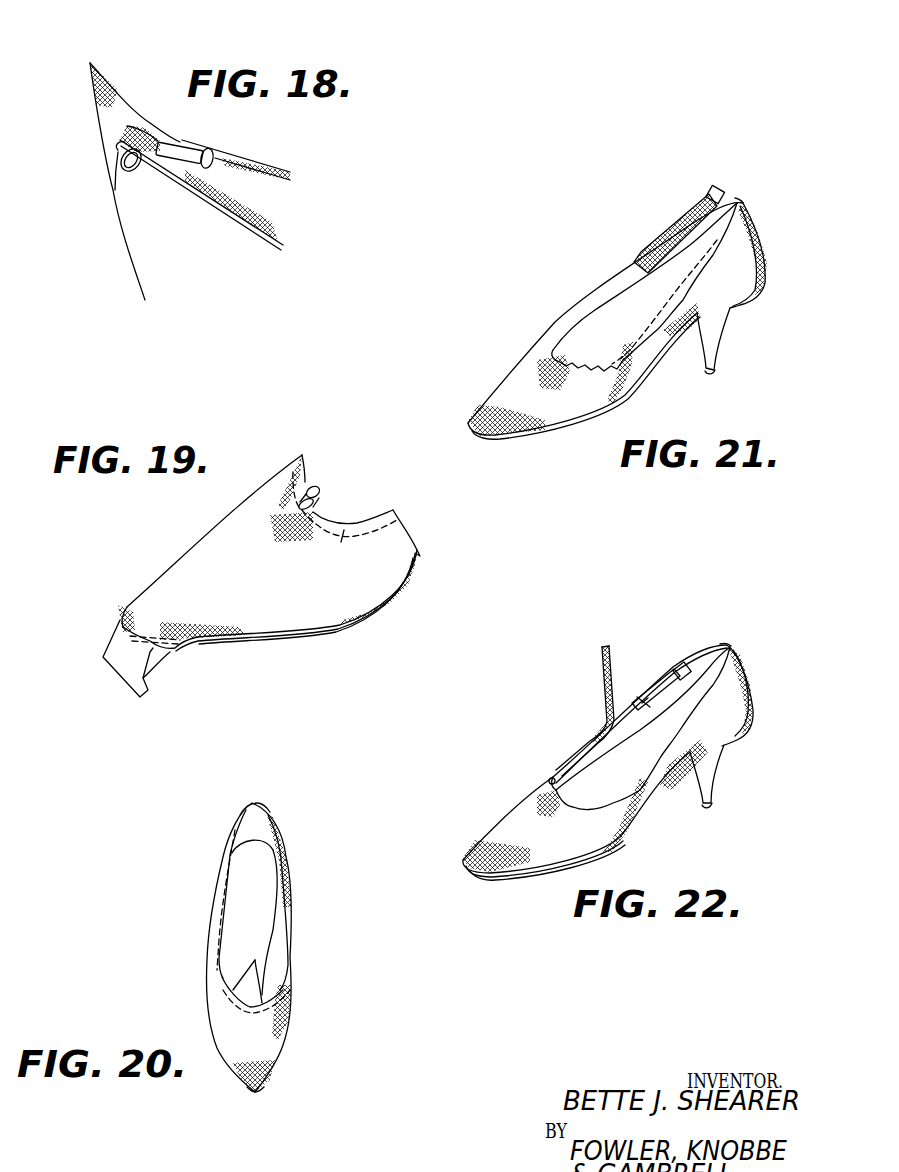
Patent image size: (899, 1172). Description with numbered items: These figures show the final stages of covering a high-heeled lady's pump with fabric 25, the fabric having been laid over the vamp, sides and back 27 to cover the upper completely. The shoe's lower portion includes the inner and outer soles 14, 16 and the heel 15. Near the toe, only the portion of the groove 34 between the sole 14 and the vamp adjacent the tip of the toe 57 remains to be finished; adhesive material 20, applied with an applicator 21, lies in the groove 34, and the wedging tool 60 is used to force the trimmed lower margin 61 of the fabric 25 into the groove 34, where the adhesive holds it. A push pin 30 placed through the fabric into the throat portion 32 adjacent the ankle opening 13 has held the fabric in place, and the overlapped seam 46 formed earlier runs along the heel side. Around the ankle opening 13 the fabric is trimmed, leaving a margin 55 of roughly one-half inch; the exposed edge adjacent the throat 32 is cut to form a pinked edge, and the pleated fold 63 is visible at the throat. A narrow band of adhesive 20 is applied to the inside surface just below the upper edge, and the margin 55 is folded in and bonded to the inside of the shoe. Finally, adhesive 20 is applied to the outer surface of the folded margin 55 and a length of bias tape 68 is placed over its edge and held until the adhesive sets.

In FIG. 20, the ankle opening 13 is at (260, 902).
In FIG. 21, the ankle opening 13 is at (610, 307).
In FIG. 22, the ankle opening 13 is at (597, 763).
In FIG. 18, the inner sole 14 is at (132, 238).
In FIG. 19, the inner sole 14 is at (310, 630).
In FIG. 21, the inner sole 14 is at (531, 430).
In FIG. 22, the inner sole 14 is at (527, 873).
In FIG. 21, the heel 15 is at (727, 317).
In FIG. 22, the heel 15 is at (720, 757).
In FIG. 18, the outer sole 16 is at (265, 242).
In FIG. 18, the adhesive material 20 is at (125, 143).
In FIG. 21, the adhesive material 20 is at (670, 237).
In FIG. 22, the adhesive material 20 is at (630, 700).
In FIG. 18, the applicator 21 is at (187, 147).
In FIG. 21, the applicator 21 is at (707, 202).
In FIG. 22, the applicator 21 is at (680, 669).
In FIG. 18, the fabric 25 is at (90, 82).
In FIG. 19, the fabric 25 is at (207, 545).
In FIG. 20, the fabric 25 is at (213, 1015).
In FIG. 21, the fabric 25 is at (527, 357).
In FIG. 22, the fabric 25 is at (517, 810).
In FIG. 20, the back 27 is at (253, 803).
In FIG. 21, the back 27 is at (753, 226).
In FIG. 22, the back 27 is at (740, 667).
In FIG. 19, the push pin 30 is at (318, 490).
In FIG. 19, the throat portion 32 is at (360, 513).
In FIG. 20, the throat portion 32 is at (297, 1012).
In FIG. 22, the throat portion 32 is at (550, 783).
In FIG. 19, the groove 34 is at (250, 632).
In FIG. 22, the groove 34 is at (497, 873).
In FIG. 21, the overlapped seam 46 is at (677, 327).
In FIG. 22, the overlapped seam 46 is at (667, 767).
In FIG. 19, the margin 55 is at (303, 470).
In FIG. 20, the margin 55 is at (230, 858).
In FIG. 21, the margin 55 is at (590, 300).
In FIG. 22, the margin 55 is at (703, 647).
In FIG. 18, the tip of the toe 57 is at (127, 137).
In FIG. 19, the tip of the toe 57 is at (123, 617).
In FIG. 20, the tip of the toe 57 is at (255, 1092).
In FIG. 19, the wedging tool 60 is at (110, 648).
In FIG. 19, the trimmed lower margin 61 is at (177, 647).
In FIG. 20, the pleat 63 is at (247, 970).
In FIG. 22, the bias tape 68 is at (603, 668).